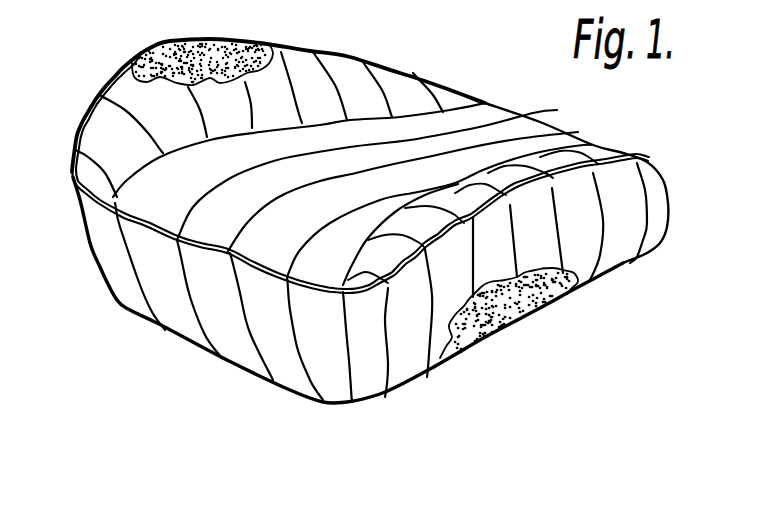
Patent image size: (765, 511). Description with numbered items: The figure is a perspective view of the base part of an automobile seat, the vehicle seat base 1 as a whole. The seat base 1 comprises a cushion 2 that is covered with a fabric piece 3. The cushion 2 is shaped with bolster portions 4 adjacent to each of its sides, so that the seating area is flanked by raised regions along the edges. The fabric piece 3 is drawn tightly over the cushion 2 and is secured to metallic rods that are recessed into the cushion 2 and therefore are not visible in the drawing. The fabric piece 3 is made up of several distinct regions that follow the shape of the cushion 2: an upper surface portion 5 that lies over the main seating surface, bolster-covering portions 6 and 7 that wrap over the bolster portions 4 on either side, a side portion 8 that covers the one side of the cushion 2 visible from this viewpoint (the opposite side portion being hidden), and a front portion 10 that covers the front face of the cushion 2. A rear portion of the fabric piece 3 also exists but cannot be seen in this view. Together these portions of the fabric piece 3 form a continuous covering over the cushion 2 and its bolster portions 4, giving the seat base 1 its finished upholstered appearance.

The vehicle seat base 1 is at (553, 113).
The cushion 2 is at (508, 313).
The fabric piece 3 is at (103, 272).
The bolster portions 4 is at (223, 50).
The upper surface portion 5 is at (498, 138).
The bolster-covering portion 6 is at (603, 160).
The bolster-covering portion 7 is at (358, 80).
The side portion 8 is at (630, 243).
The front portion 10 is at (243, 353).